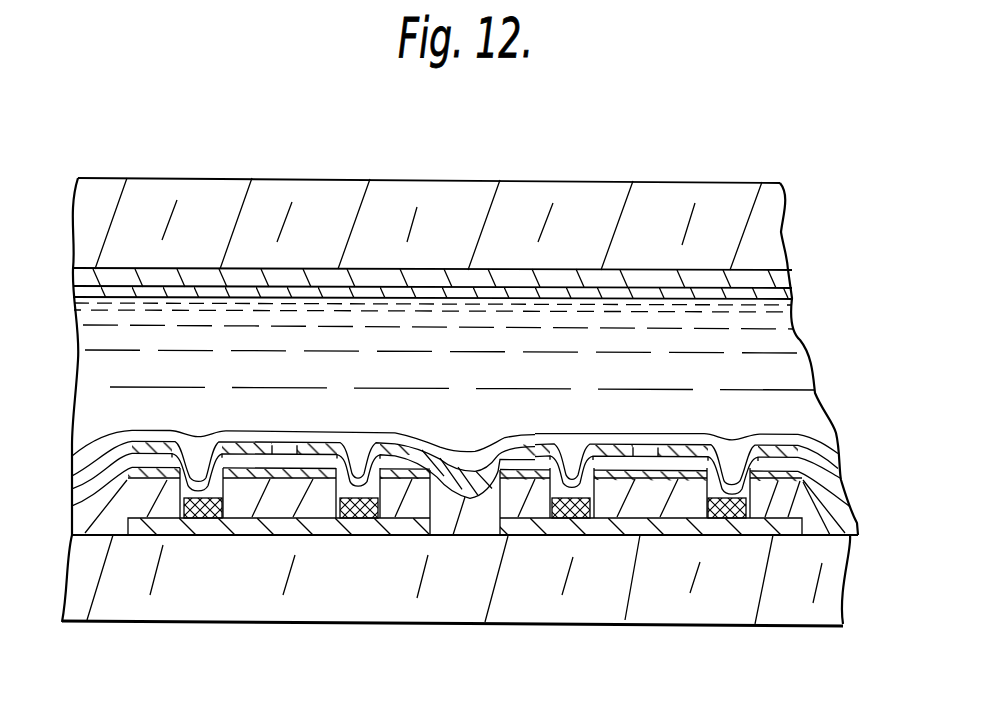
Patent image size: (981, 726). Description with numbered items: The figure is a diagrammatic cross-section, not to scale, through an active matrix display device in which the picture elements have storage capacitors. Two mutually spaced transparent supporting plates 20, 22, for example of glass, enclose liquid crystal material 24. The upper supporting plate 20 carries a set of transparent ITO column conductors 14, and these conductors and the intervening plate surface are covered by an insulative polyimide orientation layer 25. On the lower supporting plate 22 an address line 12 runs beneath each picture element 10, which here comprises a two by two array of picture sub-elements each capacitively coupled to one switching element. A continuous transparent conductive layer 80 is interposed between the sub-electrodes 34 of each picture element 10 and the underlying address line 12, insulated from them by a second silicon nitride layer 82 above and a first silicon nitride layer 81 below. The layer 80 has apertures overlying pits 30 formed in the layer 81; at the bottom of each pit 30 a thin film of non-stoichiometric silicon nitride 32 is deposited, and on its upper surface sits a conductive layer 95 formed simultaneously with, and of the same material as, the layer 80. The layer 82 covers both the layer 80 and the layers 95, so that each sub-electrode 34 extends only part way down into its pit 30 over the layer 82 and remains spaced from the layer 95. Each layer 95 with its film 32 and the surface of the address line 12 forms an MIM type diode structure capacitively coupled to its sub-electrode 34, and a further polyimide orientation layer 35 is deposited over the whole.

The picture element 10 is at (233, 432).
The address line 12 is at (140, 535).
The column conductor 14 is at (742, 278).
The upper supporting plate 20 is at (700, 195).
The lower supporting plate 22 is at (797, 602).
The liquid crystal material 24 is at (790, 345).
The orientation layer 25 is at (790, 295).
The pit 30 is at (185, 535).
The non-stoichiometric silicon nitride thin film 32 is at (212, 535).
The sub-electrode 34 is at (306, 440).
The orientation layer 35 is at (78, 457).
The conductive layer 80 is at (128, 462).
The first silicon nitride layer 81 is at (85, 505).
The second silicon nitride layer 82 is at (85, 478).
The conductive layer 95 is at (204, 518).